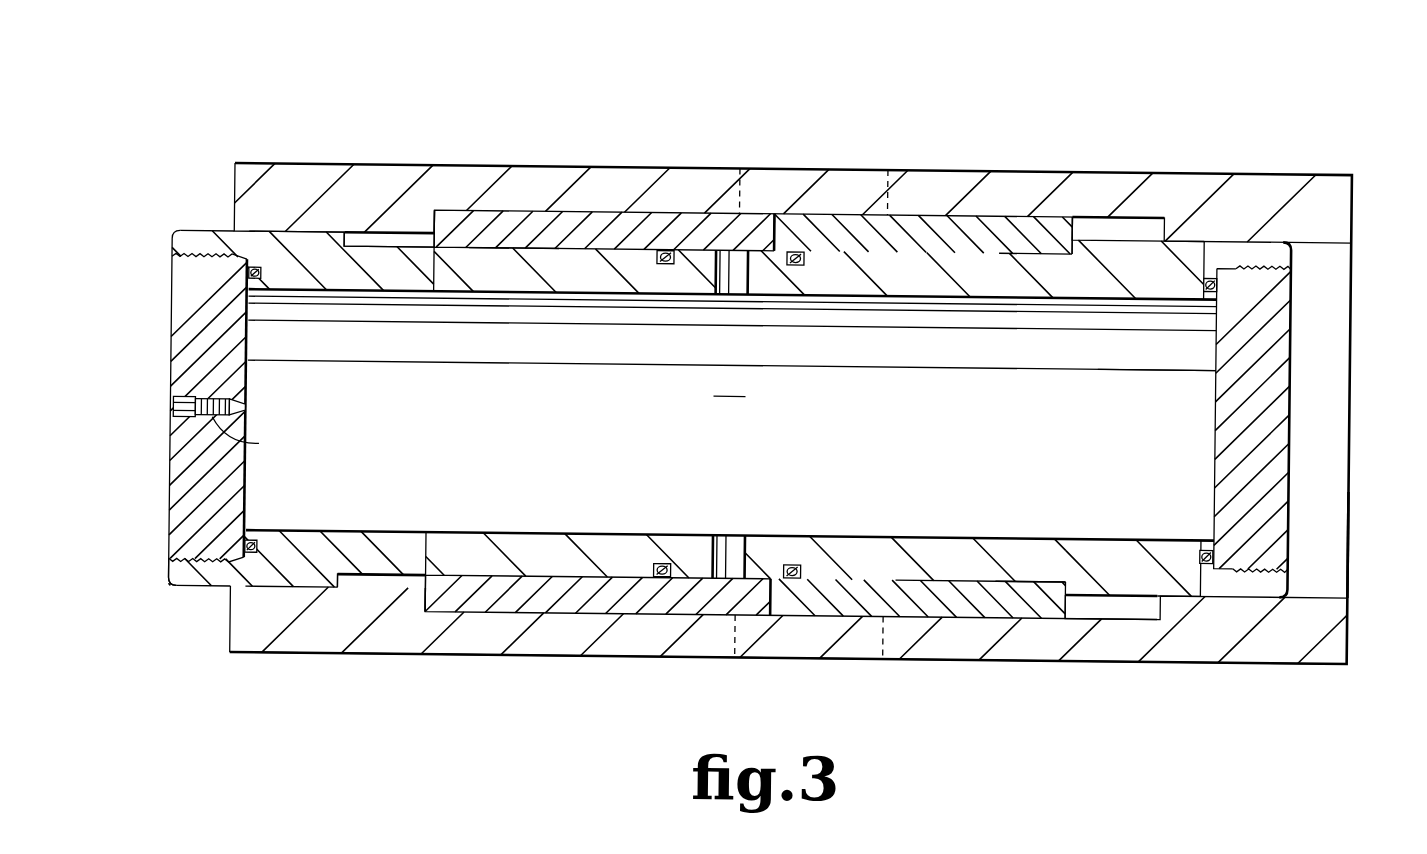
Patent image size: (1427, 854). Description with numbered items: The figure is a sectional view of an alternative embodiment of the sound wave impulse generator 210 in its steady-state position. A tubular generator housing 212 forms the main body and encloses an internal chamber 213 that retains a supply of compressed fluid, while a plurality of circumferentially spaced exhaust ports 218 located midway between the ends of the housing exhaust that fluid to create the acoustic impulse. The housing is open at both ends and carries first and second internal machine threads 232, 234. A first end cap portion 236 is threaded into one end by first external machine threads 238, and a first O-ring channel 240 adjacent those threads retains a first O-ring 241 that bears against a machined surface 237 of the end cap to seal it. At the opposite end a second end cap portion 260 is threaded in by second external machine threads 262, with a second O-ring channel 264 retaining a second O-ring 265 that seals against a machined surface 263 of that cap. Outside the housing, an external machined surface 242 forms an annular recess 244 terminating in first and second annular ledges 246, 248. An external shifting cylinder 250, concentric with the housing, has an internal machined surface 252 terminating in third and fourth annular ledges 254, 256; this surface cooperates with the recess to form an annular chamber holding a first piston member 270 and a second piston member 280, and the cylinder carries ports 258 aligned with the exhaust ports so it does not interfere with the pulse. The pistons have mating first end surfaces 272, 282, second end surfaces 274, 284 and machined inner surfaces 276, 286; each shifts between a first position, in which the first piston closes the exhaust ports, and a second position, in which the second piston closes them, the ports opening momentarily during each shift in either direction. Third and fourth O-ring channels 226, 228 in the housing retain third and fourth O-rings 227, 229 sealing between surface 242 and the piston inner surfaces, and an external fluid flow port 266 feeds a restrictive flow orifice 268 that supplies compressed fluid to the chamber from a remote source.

The sound wave impulse generator 210 is at (648, 700).
The generator housing 212 is at (1068, 270).
The internal chamber 213 is at (729, 385).
The exhaust ports 218 is at (737, 276).
The third O-ring channel 226 is at (672, 568).
The third O-ring 227 is at (658, 560).
The fourth O-ring channel 228 is at (805, 562).
The fourth O-ring 229 is at (800, 560).
The first internal machine threads 232 is at (192, 296).
The second internal machine threads 234 is at (1288, 268).
The first end cap portion 236 is at (176, 502).
The machined surface 237 is at (252, 374).
The first external machine threads 238 is at (176, 572).
The first O-ring channel 240 is at (262, 543).
The first O-ring 241 is at (255, 539).
The external machined surface 242 is at (424, 236).
The annular recess 244 is at (393, 236).
The first annular ledge 246 is at (362, 238).
The second annular ledge 248 is at (1043, 257).
The external shifting cylinder 250 is at (528, 177).
The internal machined surface 252 is at (608, 214).
The third annular ledge 254 is at (440, 212).
The fourth annular ledge 256 is at (1160, 218).
The cylinder ports 258 is at (800, 181).
The second end cap portion 260 is at (1278, 441).
The second external machine threads 262 is at (1348, 536).
The machined surface 263 is at (1157, 382).
The second O-ring channel 264 is at (1200, 558).
The second O-ring 265 is at (1212, 560).
The external fluid flow port 266 is at (185, 414).
The restrictive flow orifice 268 is at (262, 443).
The first piston member 270 is at (640, 240).
The first end surface 272 is at (780, 212).
The second end surface 274 is at (426, 264).
The machined inner surface 276 is at (517, 248).
The second piston member 280 is at (922, 238).
The first end surface 282 is at (772, 216).
The second end surface 284 is at (1068, 207).
The machined inner surface 286 is at (845, 255).